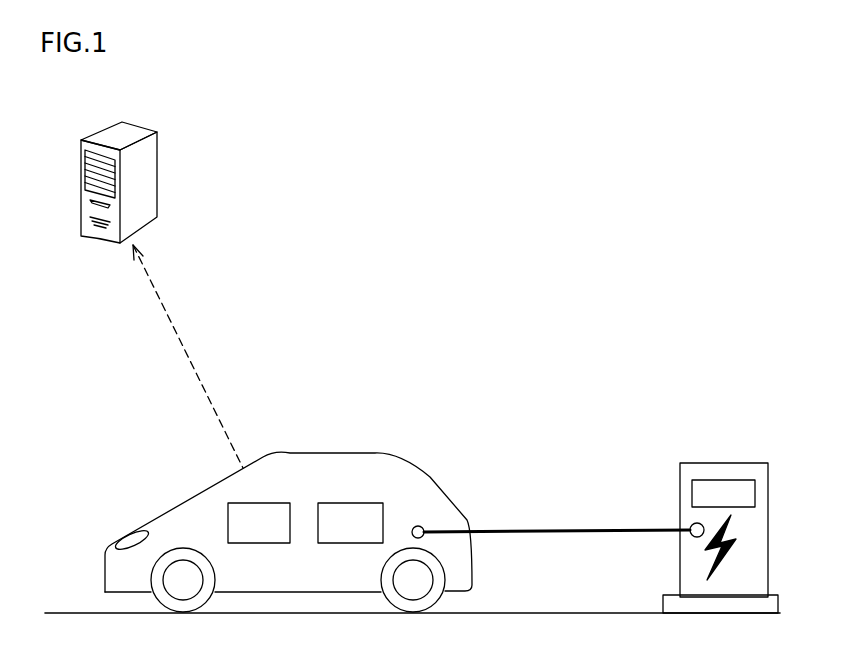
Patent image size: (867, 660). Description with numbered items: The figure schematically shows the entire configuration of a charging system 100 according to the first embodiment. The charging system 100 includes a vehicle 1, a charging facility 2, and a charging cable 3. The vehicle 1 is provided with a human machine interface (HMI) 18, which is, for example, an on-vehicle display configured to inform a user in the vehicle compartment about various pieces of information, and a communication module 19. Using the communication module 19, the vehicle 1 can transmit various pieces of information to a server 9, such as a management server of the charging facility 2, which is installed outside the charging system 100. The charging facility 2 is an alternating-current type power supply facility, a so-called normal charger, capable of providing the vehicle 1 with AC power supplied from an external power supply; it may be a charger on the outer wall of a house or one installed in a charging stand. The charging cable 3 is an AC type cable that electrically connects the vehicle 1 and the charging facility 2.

The vehicle 1 is at (373, 453).
The charging facility 2 is at (742, 463).
The charging cable 3 is at (567, 530).
The server 9 is at (140, 126).
The human machine interface (HMI) 18 is at (277, 503).
The communication module 19 is at (357, 503).
The charging system 100 is at (653, 308).